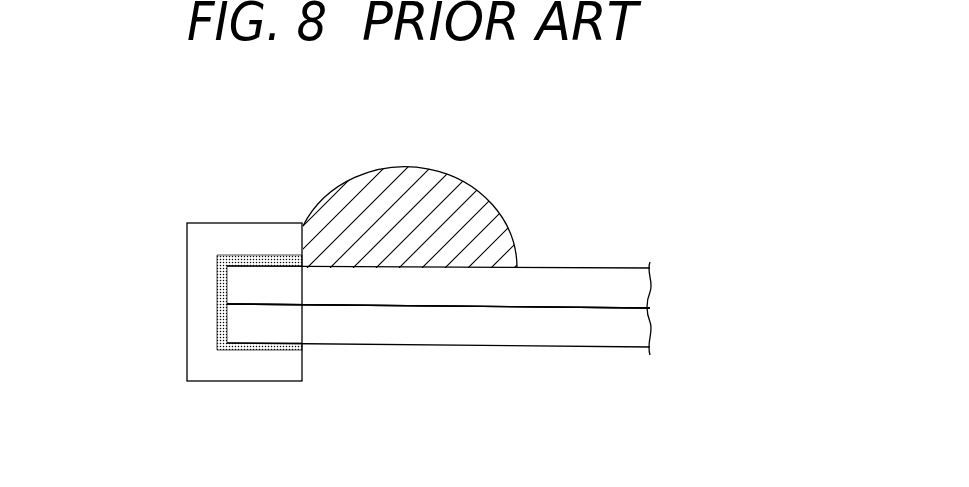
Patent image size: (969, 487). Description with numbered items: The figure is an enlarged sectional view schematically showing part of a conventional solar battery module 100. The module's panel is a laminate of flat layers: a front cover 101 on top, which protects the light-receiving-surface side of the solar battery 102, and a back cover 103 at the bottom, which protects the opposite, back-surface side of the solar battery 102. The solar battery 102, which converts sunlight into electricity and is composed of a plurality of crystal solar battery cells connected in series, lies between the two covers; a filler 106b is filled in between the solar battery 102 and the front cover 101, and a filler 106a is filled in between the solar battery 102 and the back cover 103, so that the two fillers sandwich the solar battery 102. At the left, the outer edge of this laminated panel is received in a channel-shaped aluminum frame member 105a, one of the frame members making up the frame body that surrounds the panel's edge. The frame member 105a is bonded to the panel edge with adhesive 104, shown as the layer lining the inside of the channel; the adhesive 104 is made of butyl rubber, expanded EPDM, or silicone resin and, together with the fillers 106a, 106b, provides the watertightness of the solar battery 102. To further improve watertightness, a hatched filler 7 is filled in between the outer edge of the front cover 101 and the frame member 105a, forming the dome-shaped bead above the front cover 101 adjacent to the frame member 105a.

The filler 7 is at (443, 185).
The solar battery module 100 is at (556, 196).
The front cover 101 is at (637, 290).
The solar battery 102 is at (650, 308).
The filler 106a is at (438, 306).
The filler 106b is at (438, 306).
The back cover 103 is at (645, 335).
The adhesive 104 is at (293, 345).
The frame member 105a is at (202, 303).